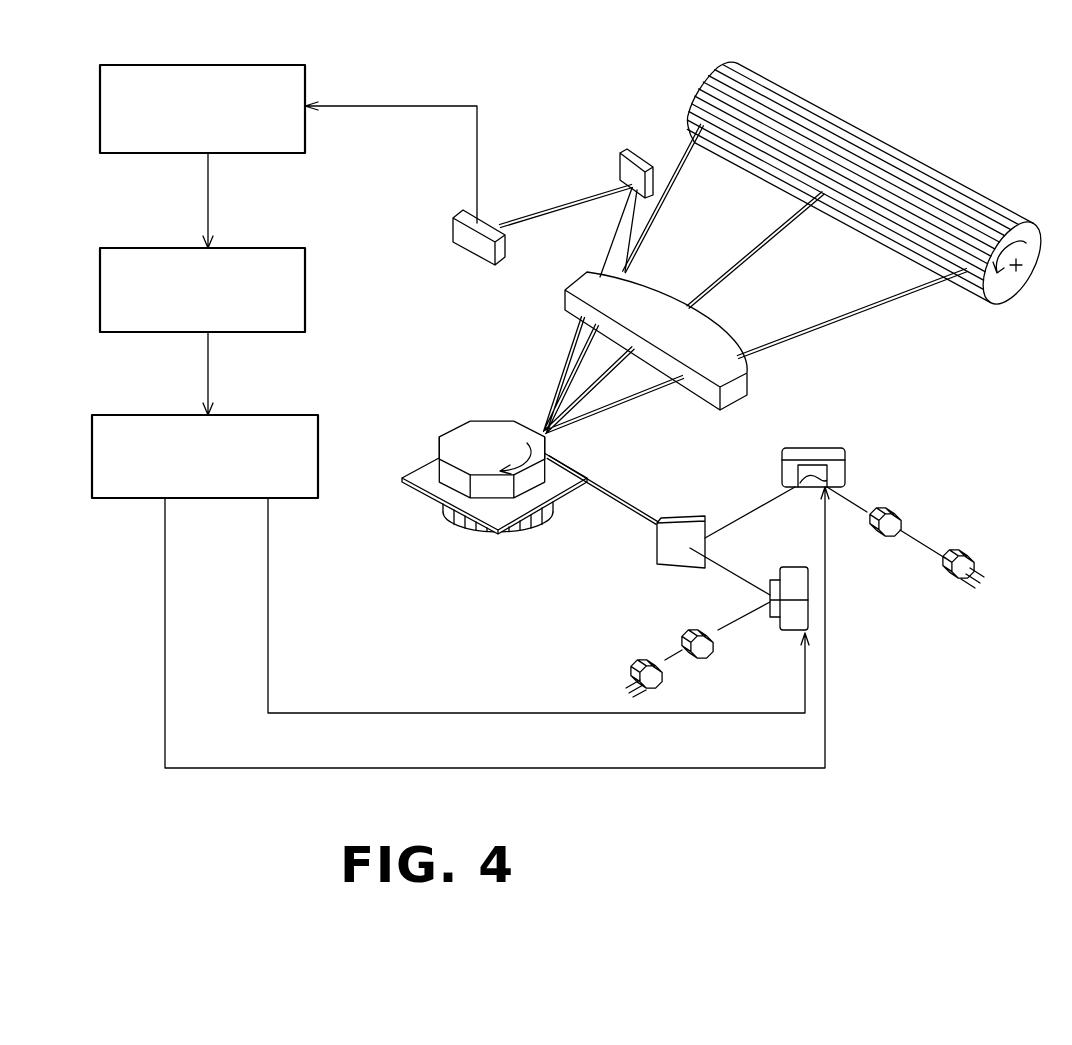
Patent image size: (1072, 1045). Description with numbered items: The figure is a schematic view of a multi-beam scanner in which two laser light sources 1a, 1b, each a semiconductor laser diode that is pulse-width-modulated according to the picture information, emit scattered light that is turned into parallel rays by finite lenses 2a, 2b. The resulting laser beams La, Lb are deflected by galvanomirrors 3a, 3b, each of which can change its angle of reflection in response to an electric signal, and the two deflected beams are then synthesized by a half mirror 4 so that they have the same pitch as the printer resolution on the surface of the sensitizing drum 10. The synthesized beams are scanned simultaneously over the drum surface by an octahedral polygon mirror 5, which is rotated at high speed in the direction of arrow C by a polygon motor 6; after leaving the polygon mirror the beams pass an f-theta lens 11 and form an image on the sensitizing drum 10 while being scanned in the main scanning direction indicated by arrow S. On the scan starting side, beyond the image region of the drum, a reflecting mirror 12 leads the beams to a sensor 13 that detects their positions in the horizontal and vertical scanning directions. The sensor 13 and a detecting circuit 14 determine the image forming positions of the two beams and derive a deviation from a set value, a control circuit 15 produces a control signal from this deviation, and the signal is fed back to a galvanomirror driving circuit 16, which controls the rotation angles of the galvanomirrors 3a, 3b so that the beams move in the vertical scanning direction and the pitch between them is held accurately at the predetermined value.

The laser light source 1a is at (655, 693).
The laser light source 1b is at (950, 583).
The finite lens 2a is at (700, 660).
The finite lens 2b is at (902, 508).
The galvanomirror 3a is at (808, 613).
The galvanomirror 3b is at (848, 460).
The half mirror 4 is at (657, 550).
The polygon mirror 5 is at (462, 440).
The polygon motor 6 is at (452, 525).
The sensitizing drum 10 is at (1028, 222).
The f-theta lens 11 is at (748, 392).
The reflecting mirror 12 is at (630, 151).
The sensor 13 is at (453, 222).
The detecting circuit 14 is at (100, 130).
The control circuit 15 is at (100, 293).
The galvanomirror driving circuit 16 is at (92, 455).
The main scanning direction arrow S is at (860, 83).
The rotation direction arrow C is at (537, 505).
The laser beam La is at (733, 578).
The laser beam Lb is at (737, 507).